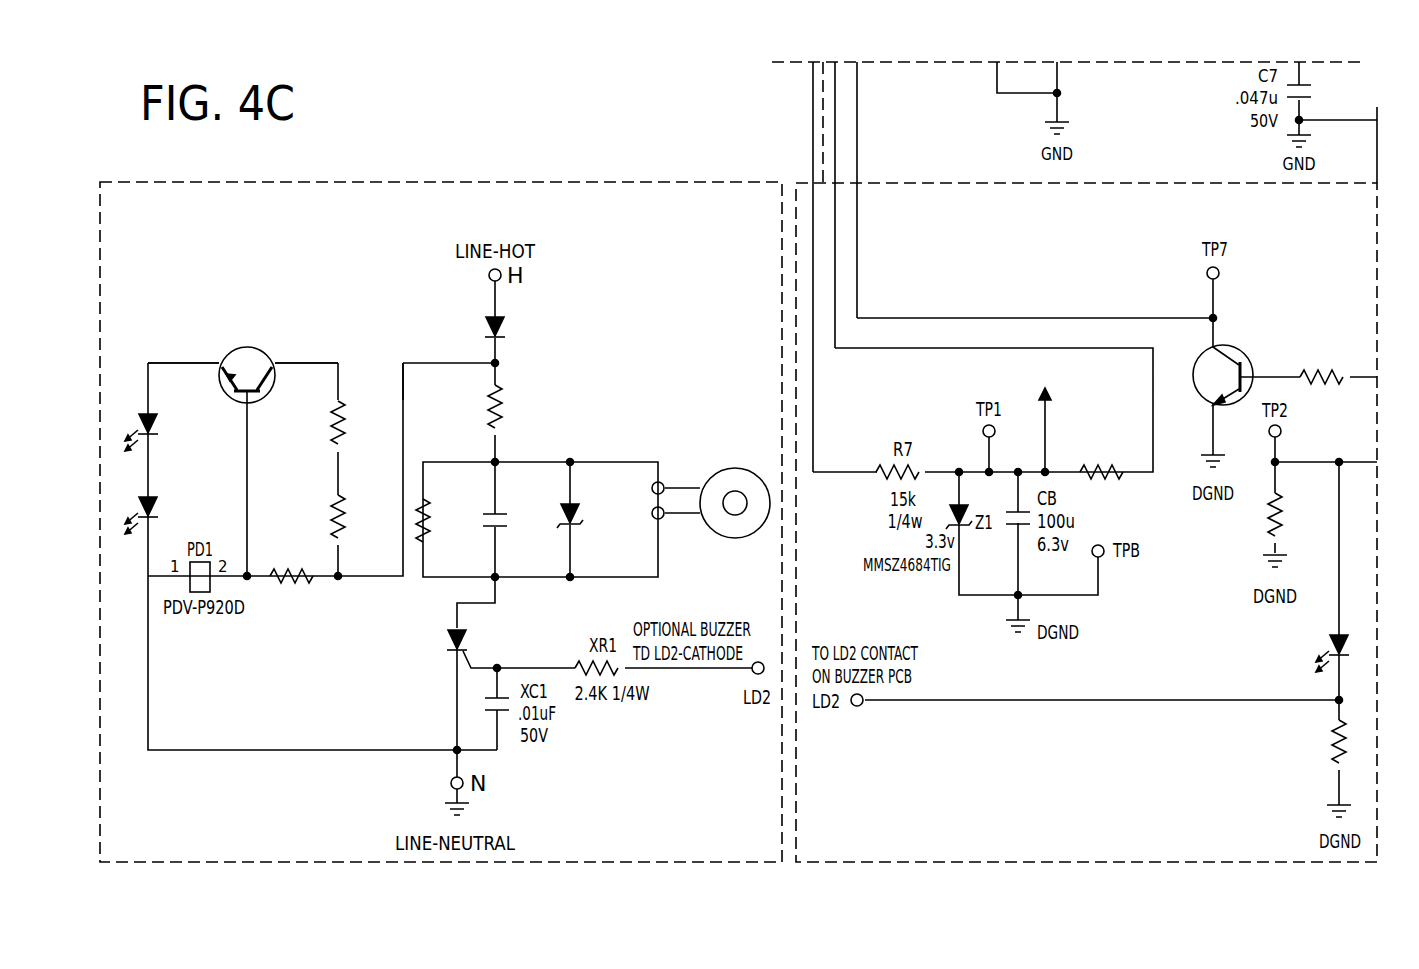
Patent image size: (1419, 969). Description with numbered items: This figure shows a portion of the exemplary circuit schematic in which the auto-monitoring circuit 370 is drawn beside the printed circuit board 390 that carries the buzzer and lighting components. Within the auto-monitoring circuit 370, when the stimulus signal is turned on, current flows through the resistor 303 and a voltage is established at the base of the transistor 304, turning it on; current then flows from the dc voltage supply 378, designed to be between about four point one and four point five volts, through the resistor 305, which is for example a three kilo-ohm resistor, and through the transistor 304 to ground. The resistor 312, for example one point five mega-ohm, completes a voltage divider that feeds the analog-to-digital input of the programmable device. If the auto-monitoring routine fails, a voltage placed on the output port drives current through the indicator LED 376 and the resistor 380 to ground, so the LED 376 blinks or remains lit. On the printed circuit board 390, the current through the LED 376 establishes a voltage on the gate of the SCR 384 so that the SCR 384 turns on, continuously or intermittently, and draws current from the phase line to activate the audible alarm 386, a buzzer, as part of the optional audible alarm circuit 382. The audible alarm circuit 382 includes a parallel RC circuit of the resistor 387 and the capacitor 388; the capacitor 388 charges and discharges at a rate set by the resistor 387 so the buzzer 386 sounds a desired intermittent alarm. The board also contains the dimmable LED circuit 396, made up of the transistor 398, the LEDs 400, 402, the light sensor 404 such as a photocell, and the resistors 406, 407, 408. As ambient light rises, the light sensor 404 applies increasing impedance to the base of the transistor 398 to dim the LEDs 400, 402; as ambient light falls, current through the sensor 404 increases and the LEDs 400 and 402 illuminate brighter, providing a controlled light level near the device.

The printed circuit board 390 is at (707, 182).
The auto-monitoring circuit 370 is at (1012, 184).
The audible alarm circuit 382 is at (672, 334).
The SCR 384 is at (445, 683).
The audible alarm 386 is at (768, 494).
The resistor 387 is at (486, 418).
The capacitor 388 is at (418, 505).
The dimmable LED circuit 396 is at (328, 347).
The transistor 398 is at (222, 378).
The LED 400 is at (140, 410).
The LED 402 is at (165, 488).
The light sensor 404 is at (222, 588).
The resistor 406 is at (333, 432).
The resistor 407 is at (333, 508).
The resistor 408 is at (300, 566).
The dc voltage supply 378 is at (1030, 396).
The resistor 305 is at (1125, 465).
The resistor 303 is at (1348, 369).
The transistor 304 is at (1203, 393).
The resistor 312 is at (1270, 524).
The indicator LED 376 is at (1318, 633).
The resistor 380 is at (1290, 746).